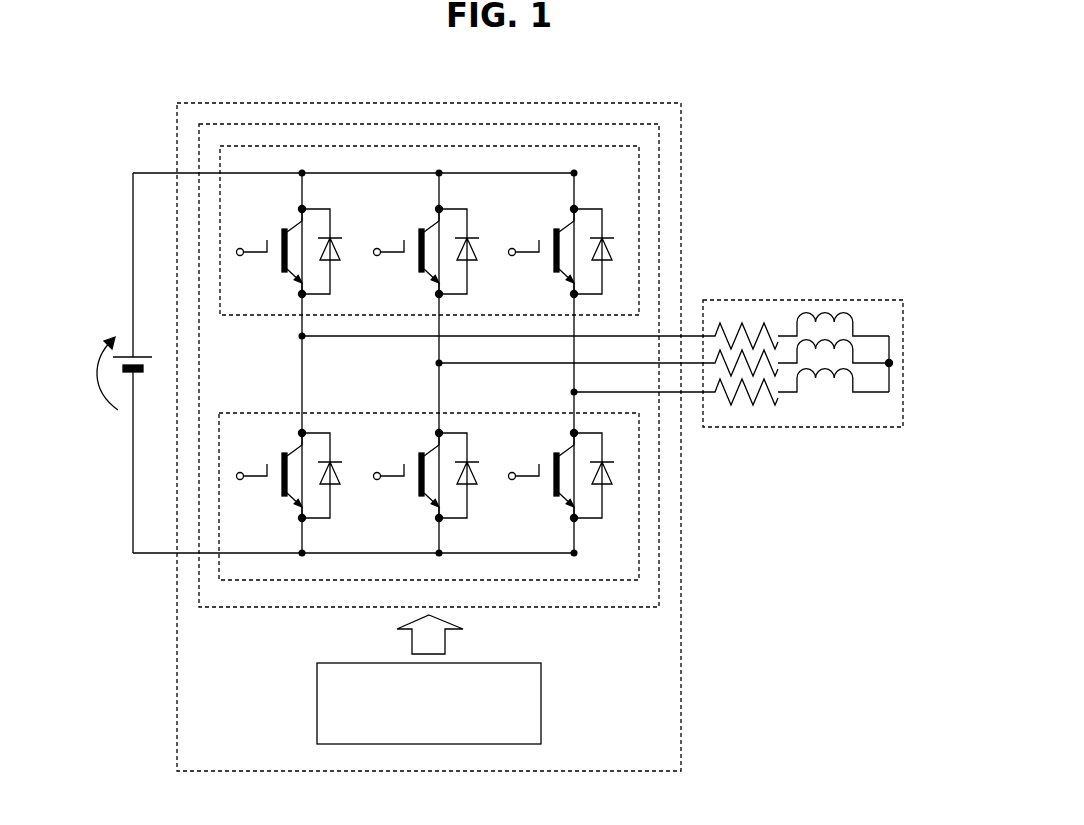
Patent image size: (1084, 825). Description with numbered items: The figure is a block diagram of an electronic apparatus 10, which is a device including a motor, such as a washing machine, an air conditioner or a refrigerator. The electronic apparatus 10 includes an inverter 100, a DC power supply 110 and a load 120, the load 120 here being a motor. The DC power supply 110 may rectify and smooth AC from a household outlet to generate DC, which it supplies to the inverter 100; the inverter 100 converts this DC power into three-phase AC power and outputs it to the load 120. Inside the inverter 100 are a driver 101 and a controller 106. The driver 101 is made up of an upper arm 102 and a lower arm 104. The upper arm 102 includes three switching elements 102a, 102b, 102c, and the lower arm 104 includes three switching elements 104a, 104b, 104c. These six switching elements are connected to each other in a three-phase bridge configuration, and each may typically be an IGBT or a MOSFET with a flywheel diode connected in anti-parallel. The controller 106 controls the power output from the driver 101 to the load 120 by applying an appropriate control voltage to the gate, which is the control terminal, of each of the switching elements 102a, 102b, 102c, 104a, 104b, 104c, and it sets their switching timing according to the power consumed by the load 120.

The electronic apparatus 10 is at (933, 208).
The inverter 100 is at (682, 170).
The driver 101 is at (659, 218).
The upper arm 102 is at (639, 266).
The switching element 102a is at (257, 232).
The switching element 102b is at (393, 232).
The switching element 102c is at (528, 232).
The lower arm 104 is at (639, 497).
The switching element 104a is at (257, 497).
The switching element 104b is at (393, 497).
The switching element 104c is at (528, 497).
The controller 106 is at (541, 693).
The DC power supply 110 is at (117, 392).
The load 120 is at (880, 299).